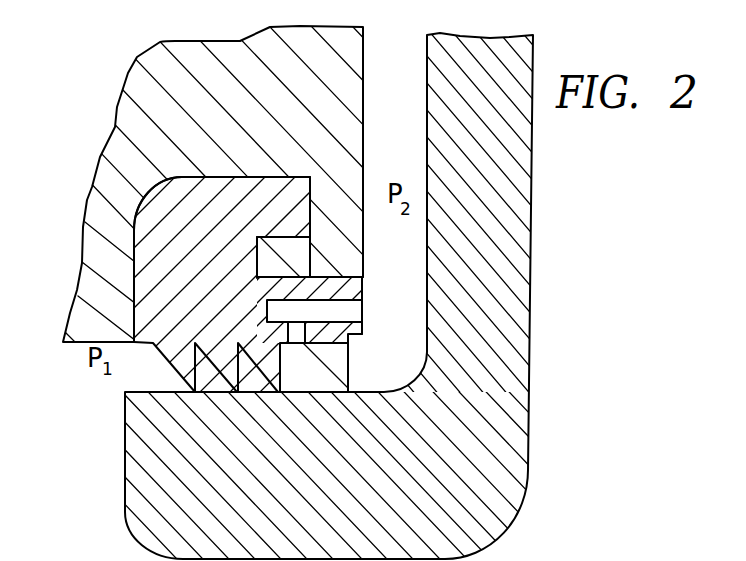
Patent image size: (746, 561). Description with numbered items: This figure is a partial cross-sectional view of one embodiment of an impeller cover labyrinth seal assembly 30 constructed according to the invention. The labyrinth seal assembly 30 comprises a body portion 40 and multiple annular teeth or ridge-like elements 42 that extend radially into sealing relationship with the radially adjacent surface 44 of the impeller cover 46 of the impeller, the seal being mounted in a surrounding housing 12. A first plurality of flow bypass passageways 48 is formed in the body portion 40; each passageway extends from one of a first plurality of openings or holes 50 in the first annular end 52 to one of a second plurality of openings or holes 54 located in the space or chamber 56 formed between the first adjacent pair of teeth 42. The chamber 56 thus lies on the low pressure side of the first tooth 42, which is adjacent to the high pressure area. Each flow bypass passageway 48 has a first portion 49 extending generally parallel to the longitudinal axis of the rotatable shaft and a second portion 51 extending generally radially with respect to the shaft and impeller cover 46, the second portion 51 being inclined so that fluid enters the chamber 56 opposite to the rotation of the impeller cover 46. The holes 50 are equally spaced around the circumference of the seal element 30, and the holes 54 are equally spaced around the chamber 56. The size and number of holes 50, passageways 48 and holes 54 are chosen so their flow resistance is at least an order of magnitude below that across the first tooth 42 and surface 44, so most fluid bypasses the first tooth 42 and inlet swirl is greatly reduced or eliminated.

The housing body 12 is at (243, 123).
The impeller cover labyrinth seal assembly 30 is at (120, 254).
The body portion 40 is at (211, 238).
The annular teeth or ridge-like elements 42 is at (235, 393).
The radially adjacent surface 44 is at (133, 391).
The impeller cover 46 is at (493, 276).
The flow bypass passageways 48 is at (349, 280).
The first portion 49 is at (285, 340).
The openings or holes 50 is at (363, 312).
The second portion 51 is at (343, 278).
The first annular end 52 is at (362, 334).
The openings or holes 54 is at (288, 340).
The space or chamber 56 is at (316, 385).